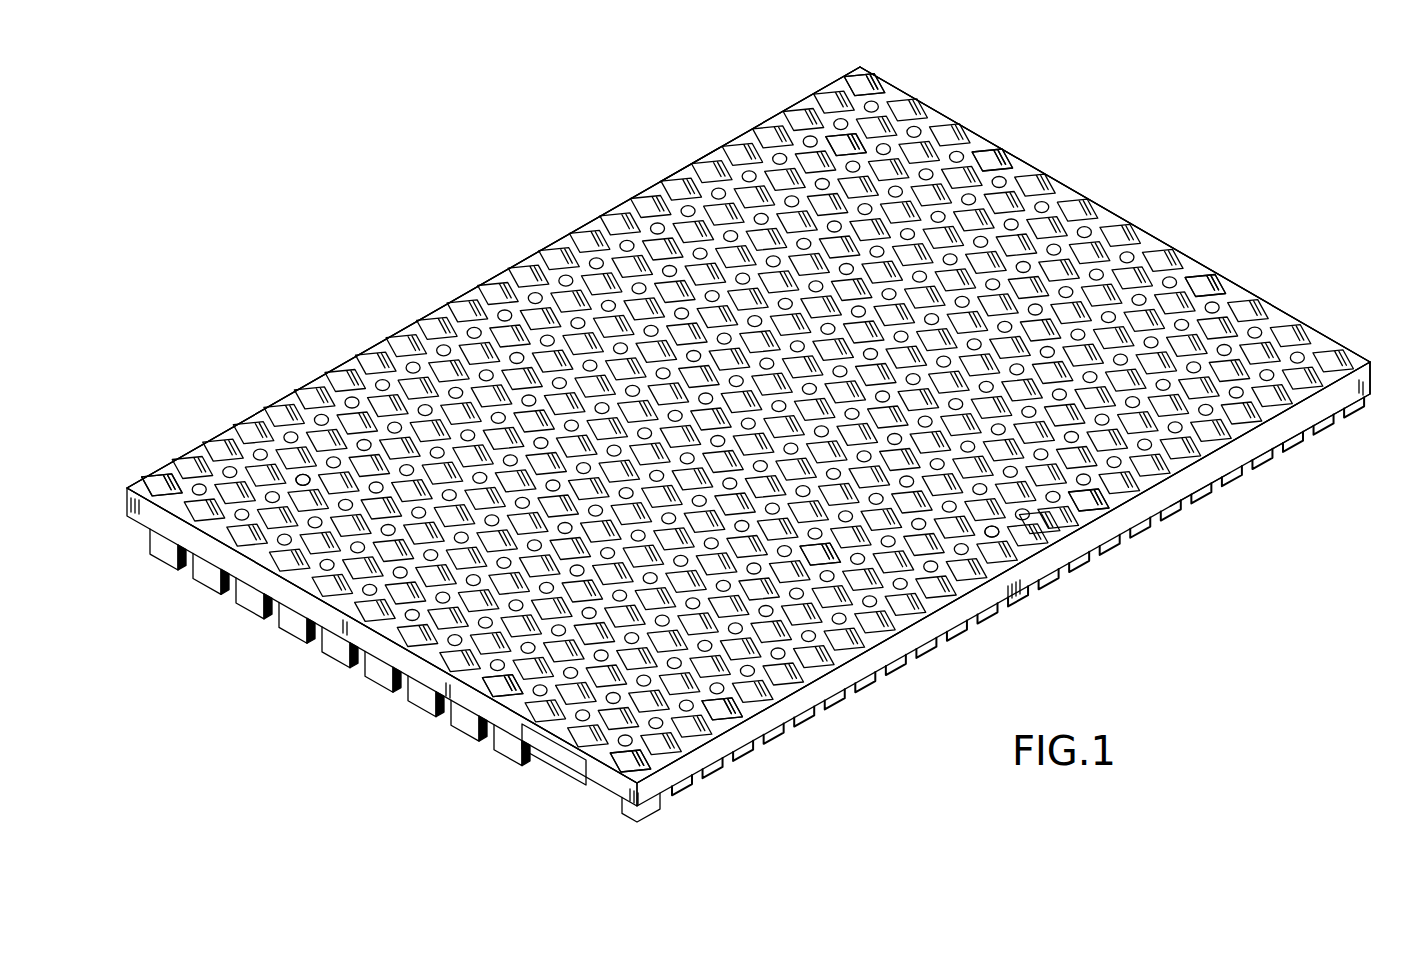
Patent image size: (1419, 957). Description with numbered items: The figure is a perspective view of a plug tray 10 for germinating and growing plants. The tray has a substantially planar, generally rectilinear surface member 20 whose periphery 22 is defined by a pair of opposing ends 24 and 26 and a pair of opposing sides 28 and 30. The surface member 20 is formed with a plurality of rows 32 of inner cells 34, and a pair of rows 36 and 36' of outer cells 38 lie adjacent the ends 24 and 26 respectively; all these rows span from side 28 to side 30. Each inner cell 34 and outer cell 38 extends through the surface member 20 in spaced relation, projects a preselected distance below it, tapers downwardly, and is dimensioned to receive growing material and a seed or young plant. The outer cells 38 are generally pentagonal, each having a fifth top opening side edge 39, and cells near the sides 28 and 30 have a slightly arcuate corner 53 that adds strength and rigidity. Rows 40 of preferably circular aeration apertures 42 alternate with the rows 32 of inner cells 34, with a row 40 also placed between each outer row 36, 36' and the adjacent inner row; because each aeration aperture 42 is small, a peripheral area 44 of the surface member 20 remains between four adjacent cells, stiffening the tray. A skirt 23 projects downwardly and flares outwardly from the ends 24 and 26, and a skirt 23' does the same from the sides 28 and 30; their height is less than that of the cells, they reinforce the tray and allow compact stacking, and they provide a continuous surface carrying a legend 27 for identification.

The plug tray 10 is at (487, 187).
The surface member 20 is at (470, 292).
The periphery 22 is at (955, 602).
The skirt 23 is at (382, 647).
The skirt 23' is at (1310, 436).
The end 24 is at (387, 632).
The end 26 is at (1065, 195).
The legend 27 is at (555, 742).
The side 28 is at (652, 185).
The side 30 is at (1090, 520).
The row of inner cells 32 is at (823, 135).
The inner cell 34 is at (765, 128).
The row of outer cells 36 is at (152, 457).
The row of outer cells 36' is at (841, 54).
The outer cell 38 is at (1200, 285).
The top opening side edge 39 is at (998, 162).
The row of aeration apertures 40 is at (596, 262).
The aeration aperture 42 is at (302, 478).
The peripheral area 44 is at (670, 792).
The arcuate corner 53 is at (690, 160).